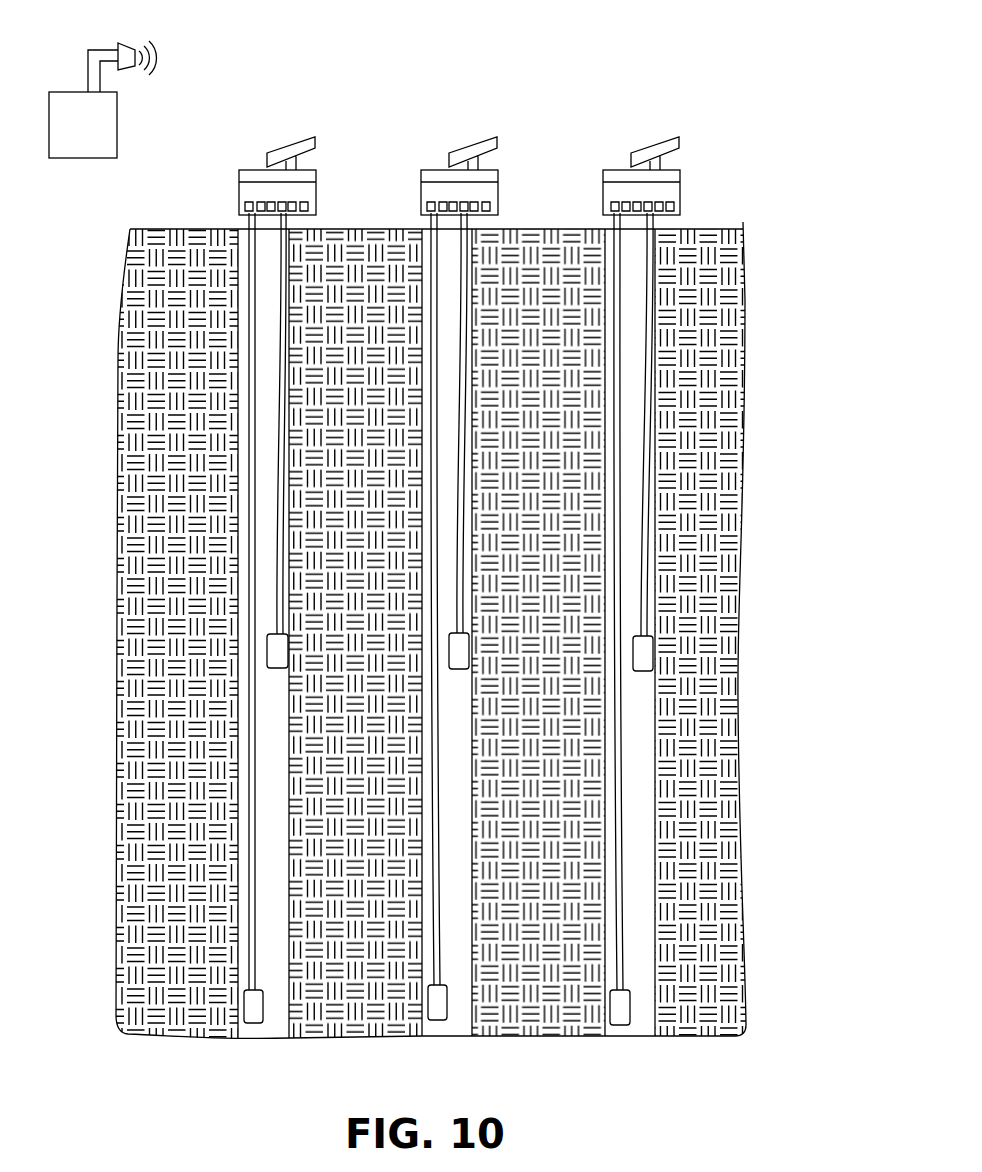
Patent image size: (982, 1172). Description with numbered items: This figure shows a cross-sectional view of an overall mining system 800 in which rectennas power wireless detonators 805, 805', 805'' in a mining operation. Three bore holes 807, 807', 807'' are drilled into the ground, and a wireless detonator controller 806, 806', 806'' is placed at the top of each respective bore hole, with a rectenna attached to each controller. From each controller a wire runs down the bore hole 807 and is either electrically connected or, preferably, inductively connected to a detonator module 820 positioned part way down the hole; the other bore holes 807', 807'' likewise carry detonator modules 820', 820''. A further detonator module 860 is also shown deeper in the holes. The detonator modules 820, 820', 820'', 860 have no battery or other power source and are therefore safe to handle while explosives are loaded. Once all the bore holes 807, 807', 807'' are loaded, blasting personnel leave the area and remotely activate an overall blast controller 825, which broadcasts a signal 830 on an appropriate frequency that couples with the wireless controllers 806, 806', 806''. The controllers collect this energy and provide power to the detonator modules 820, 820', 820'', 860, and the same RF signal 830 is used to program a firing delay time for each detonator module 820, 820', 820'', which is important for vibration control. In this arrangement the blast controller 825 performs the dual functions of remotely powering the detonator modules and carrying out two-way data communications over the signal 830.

The mining system 800 is at (754, 103).
The wireless detonator 805 is at (238, 148).
The wireless detonator 805' is at (425, 148).
The wireless detonator 805'' is at (610, 148).
The wireless detonator controller 806 is at (196, 198).
The wireless detonator controller 806' is at (385, 190).
The wireless detonator controller 806'' is at (569, 190).
The bore hole 807 is at (160, 601).
The bore hole 807' is at (481, 599).
The bore hole 807'' is at (668, 601).
The detonator module 820 is at (175, 651).
The detonator module 820' is at (507, 646).
The detonator module 820'' is at (714, 647).
The overall blast controller 825 is at (125, 79).
The signal 830 is at (163, 50).
The detonator module 860 is at (244, 1003).